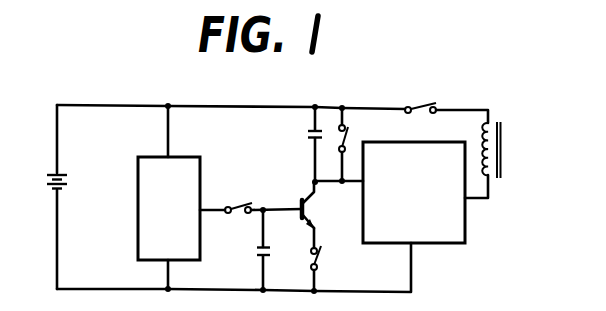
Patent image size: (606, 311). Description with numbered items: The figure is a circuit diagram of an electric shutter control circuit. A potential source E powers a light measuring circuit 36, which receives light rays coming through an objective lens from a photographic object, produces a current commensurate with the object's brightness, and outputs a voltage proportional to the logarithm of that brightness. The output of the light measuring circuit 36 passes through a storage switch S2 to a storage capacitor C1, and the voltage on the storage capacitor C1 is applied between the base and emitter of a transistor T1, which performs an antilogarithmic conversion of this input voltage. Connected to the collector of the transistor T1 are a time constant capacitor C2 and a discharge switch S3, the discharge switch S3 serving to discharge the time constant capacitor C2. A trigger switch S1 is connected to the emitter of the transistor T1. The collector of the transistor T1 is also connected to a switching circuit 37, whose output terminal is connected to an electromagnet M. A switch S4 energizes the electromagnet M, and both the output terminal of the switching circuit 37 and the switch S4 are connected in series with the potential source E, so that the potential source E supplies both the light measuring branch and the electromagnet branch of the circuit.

The light measuring circuit 36 is at (169, 208).
The switching circuit 37 is at (414, 192).
The potential source E is at (66, 183).
The trigger switch S1 is at (329, 260).
The storage switch S2 is at (238, 196).
The discharge switch S3 is at (356, 134).
The switch S4 is at (420, 96).
The storage capacitor C1 is at (275, 255).
The time constant capacitor C2 is at (302, 137).
The transistor T1 is at (296, 205).
The electromagnet M is at (502, 150).